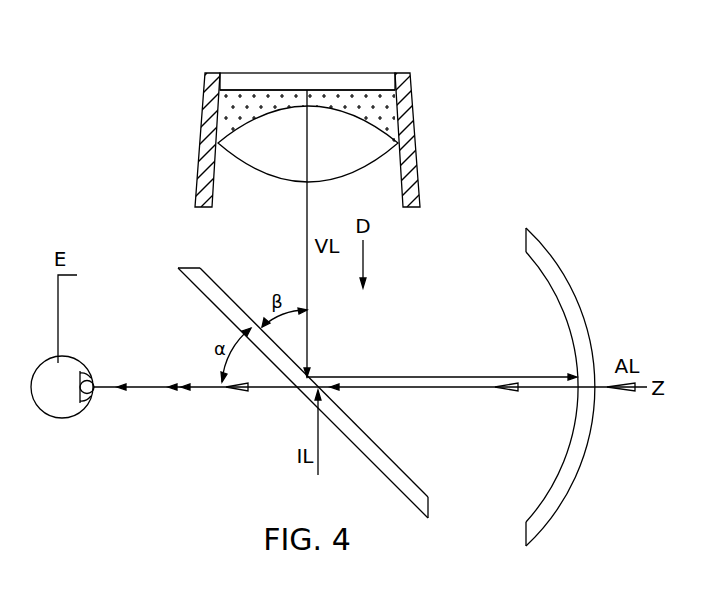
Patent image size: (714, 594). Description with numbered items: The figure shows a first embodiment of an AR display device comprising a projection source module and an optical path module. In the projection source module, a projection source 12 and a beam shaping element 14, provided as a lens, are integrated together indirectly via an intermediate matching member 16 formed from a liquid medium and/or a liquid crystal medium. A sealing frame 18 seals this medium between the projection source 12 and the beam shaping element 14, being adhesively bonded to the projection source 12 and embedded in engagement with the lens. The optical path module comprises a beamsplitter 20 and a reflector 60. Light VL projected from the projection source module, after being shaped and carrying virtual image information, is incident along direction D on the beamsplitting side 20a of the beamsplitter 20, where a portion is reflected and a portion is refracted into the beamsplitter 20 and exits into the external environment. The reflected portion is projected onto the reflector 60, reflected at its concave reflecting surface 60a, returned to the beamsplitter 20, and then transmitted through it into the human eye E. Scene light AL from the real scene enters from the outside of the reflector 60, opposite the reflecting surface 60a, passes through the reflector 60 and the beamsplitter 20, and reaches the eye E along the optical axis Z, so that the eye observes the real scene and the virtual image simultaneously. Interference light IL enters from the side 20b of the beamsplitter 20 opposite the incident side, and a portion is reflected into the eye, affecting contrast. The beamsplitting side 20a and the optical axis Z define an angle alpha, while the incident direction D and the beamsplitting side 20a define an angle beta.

The projection source 12 is at (278, 80).
The beam shaping element 14 is at (353, 140).
The intermediate matching member 16 is at (313, 97).
The sealing frame 18 is at (407, 125).
The beamsplitter 20 is at (278, 375).
The beamsplitting side 20a is at (243, 312).
The side of the beamsplitter opposite the incident side 20b is at (303, 393).
The reflector 60 is at (532, 370).
The reflecting surface 60a is at (525, 250).